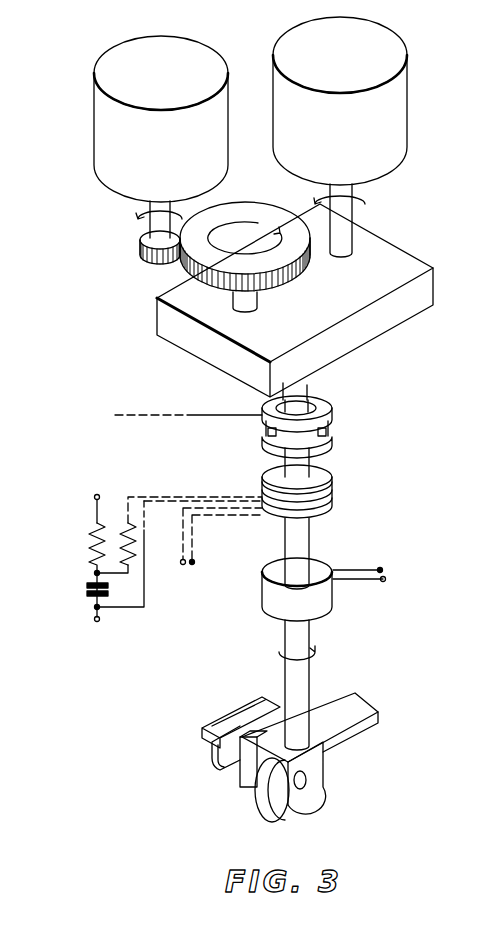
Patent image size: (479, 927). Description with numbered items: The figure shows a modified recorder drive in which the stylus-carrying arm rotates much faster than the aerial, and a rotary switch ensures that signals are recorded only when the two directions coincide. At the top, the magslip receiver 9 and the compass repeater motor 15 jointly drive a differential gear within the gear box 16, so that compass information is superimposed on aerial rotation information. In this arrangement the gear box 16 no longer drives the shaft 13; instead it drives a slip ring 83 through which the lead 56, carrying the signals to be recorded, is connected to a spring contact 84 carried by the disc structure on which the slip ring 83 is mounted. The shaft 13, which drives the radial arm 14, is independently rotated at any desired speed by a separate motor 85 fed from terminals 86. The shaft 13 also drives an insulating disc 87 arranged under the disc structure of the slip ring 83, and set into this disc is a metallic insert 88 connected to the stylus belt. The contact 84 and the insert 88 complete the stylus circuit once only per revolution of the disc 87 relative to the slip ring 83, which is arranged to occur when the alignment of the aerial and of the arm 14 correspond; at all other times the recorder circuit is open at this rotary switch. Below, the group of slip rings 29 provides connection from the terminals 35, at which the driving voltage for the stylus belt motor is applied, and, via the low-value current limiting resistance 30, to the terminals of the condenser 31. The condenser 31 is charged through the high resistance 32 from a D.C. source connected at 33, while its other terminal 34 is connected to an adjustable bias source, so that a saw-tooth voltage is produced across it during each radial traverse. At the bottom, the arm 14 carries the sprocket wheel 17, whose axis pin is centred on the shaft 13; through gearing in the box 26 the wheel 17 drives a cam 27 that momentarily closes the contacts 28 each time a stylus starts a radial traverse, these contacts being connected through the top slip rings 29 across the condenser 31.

The magslip receiver 9 is at (100, 144).
The compass repeater motor 15 is at (292, 130).
The gear box 16 is at (212, 355).
The lead 56 is at (186, 416).
The slip ring 83 is at (334, 412).
The spring contact 84 is at (268, 430).
The metallic insert 88 is at (330, 432).
The insulating disc 87 is at (318, 446).
The slip rings 29 is at (343, 504).
The D.C. source connection 33 is at (94, 497).
The high resistance 32 is at (90, 537).
The current limiting resistance 30 is at (134, 527).
The condenser 31 is at (93, 596).
The condenser terminal 34 is at (95, 620).
The motor voltage terminals 35 is at (181, 562).
The shaft 13 is at (300, 553).
The terminals 86 is at (386, 579).
The separate motor 85 is at (329, 600).
The radial arm 14 is at (335, 708).
The contacts 28 is at (210, 728).
The cam 27 is at (225, 766).
The gear box 26 is at (250, 786).
The sprocket wheel 17 is at (268, 808).